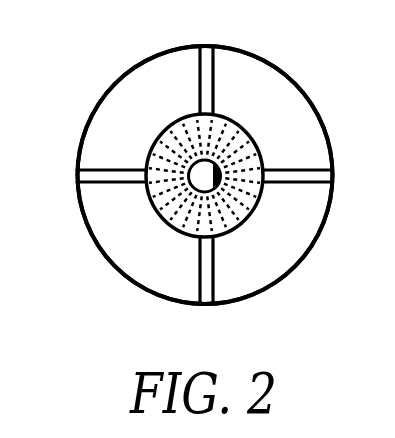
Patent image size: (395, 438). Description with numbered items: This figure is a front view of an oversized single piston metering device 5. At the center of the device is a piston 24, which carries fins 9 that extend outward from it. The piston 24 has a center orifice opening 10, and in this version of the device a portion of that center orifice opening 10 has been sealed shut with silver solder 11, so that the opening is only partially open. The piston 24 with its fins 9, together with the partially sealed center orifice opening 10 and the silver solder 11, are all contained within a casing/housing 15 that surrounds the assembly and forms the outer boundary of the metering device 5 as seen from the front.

The oversized single piston metering device 5 is at (115, 212).
The fins 9 is at (289, 182).
The center orifice opening 10 is at (203, 173).
The silver solder 11 is at (219, 185).
The casing/housing 15 is at (103, 101).
The piston 24 is at (188, 145).